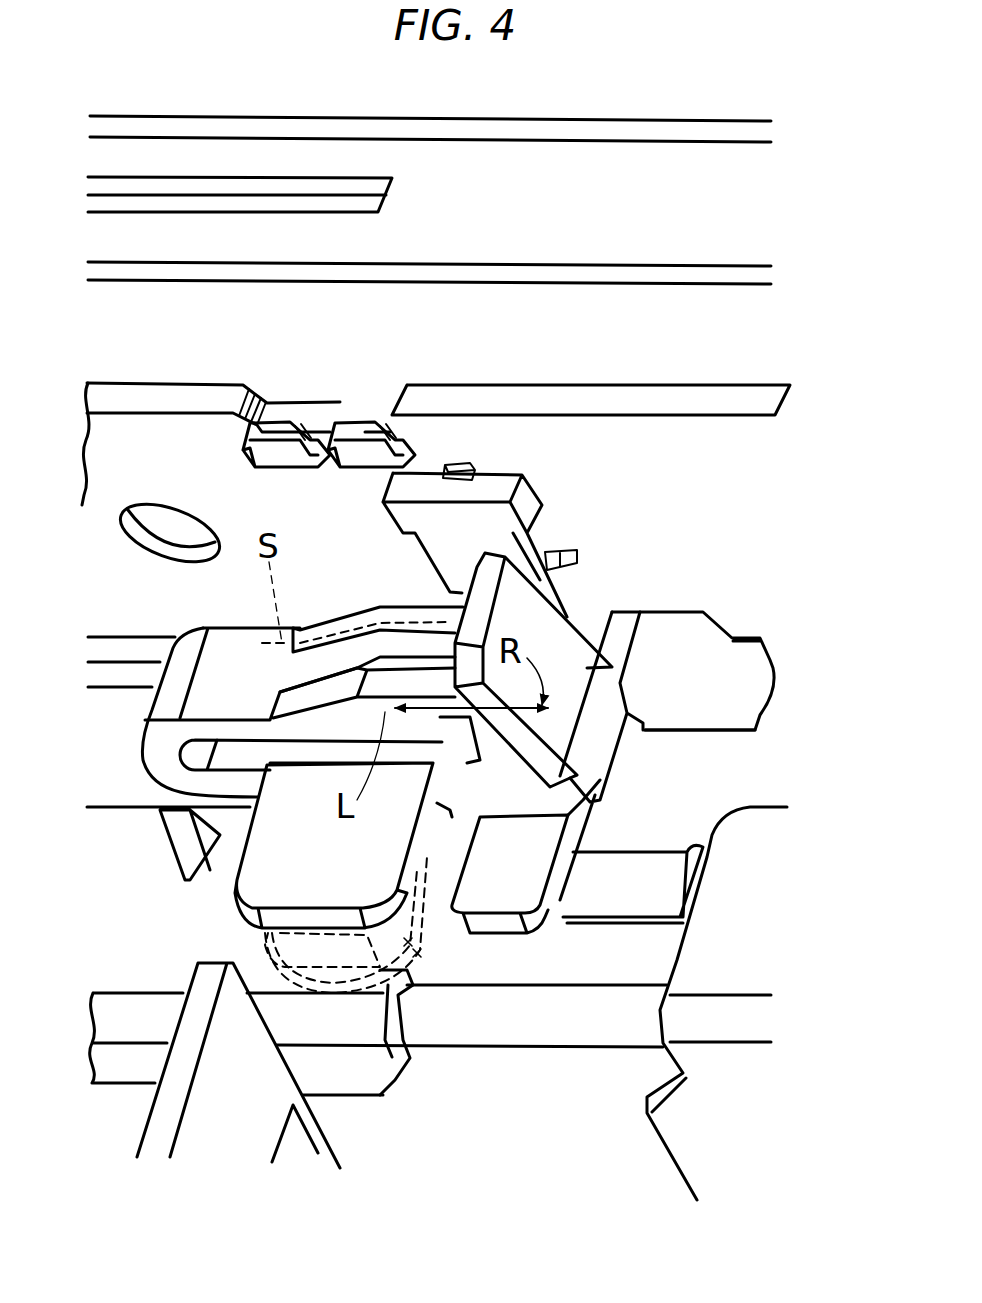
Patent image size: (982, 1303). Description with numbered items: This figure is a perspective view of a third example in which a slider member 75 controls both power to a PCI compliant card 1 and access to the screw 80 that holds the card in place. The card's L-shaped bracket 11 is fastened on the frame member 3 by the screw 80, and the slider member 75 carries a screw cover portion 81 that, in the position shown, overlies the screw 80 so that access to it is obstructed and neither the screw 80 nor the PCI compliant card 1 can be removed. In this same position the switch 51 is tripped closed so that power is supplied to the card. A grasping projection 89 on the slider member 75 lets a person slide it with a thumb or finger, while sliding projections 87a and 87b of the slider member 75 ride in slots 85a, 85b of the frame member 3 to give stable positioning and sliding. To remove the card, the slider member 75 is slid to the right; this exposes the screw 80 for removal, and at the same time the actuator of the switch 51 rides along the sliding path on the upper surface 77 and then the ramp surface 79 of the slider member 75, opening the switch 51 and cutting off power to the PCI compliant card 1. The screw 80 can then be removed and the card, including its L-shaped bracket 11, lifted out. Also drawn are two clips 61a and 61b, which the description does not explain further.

The PCI compliant card 1 is at (128, 1130).
The frame member 3 is at (725, 773).
The L-shaped bracket 11 is at (380, 1080).
The switch 51 is at (487, 485).
The clip 61a is at (283, 428).
The clip 61b is at (355, 428).
The slider member 75 is at (577, 594).
The upper surface 77 is at (400, 605).
The ramp surface 79 is at (313, 622).
The screw 80 is at (400, 935).
The screw cover portion 81 is at (250, 887).
The slot 85a is at (670, 895).
The slot 85b is at (743, 708).
The sliding projection 87a is at (553, 915).
The sliding projection 87b is at (643, 715).
The grasping projection 89 is at (553, 630).